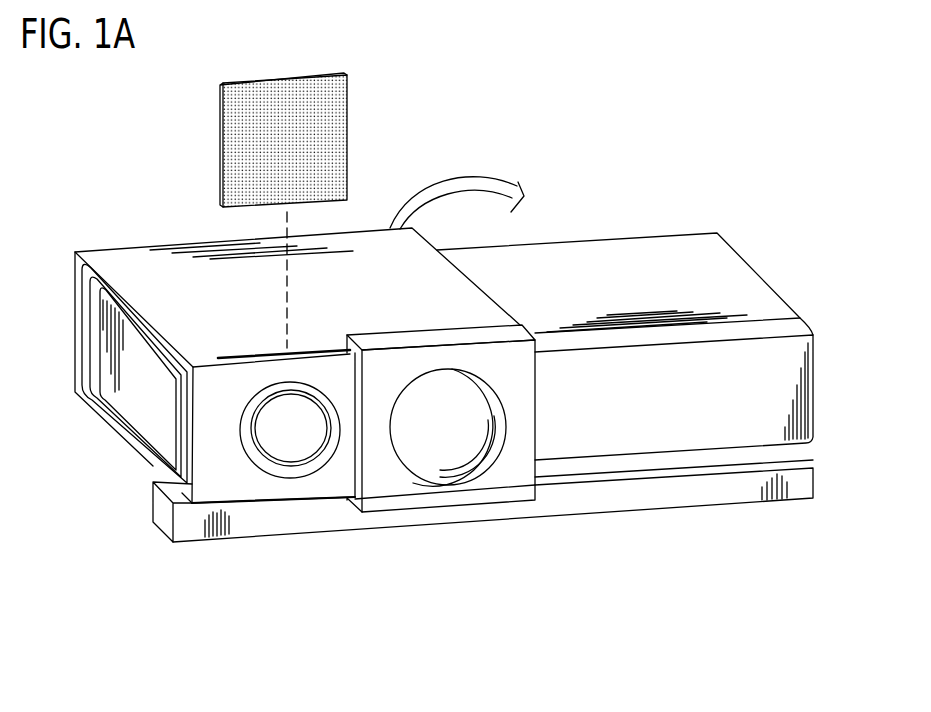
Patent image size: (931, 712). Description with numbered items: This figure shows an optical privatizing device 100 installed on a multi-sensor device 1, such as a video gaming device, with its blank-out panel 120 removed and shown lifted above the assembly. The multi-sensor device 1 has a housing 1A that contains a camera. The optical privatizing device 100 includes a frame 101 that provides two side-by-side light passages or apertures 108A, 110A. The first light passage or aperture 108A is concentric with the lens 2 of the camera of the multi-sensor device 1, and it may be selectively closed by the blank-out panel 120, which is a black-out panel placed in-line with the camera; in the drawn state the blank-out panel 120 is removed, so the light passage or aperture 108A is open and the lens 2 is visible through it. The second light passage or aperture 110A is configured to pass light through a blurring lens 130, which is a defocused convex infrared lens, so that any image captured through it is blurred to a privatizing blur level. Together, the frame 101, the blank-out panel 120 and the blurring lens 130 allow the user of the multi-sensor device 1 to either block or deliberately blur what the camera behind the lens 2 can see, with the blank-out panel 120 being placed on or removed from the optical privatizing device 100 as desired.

The multi-sensor device 1 is at (493, 356).
The housing 1A is at (702, 219).
The optical privatizing device 100 is at (178, 224).
The frame 101 is at (215, 306).
The blank-out panel 120 is at (348, 120).
The blurring lens 130 is at (440, 415).
The lens 2 is at (285, 422).
The light passage or aperture 108A is at (290, 452).
The light passage or aperture 110A is at (507, 428).